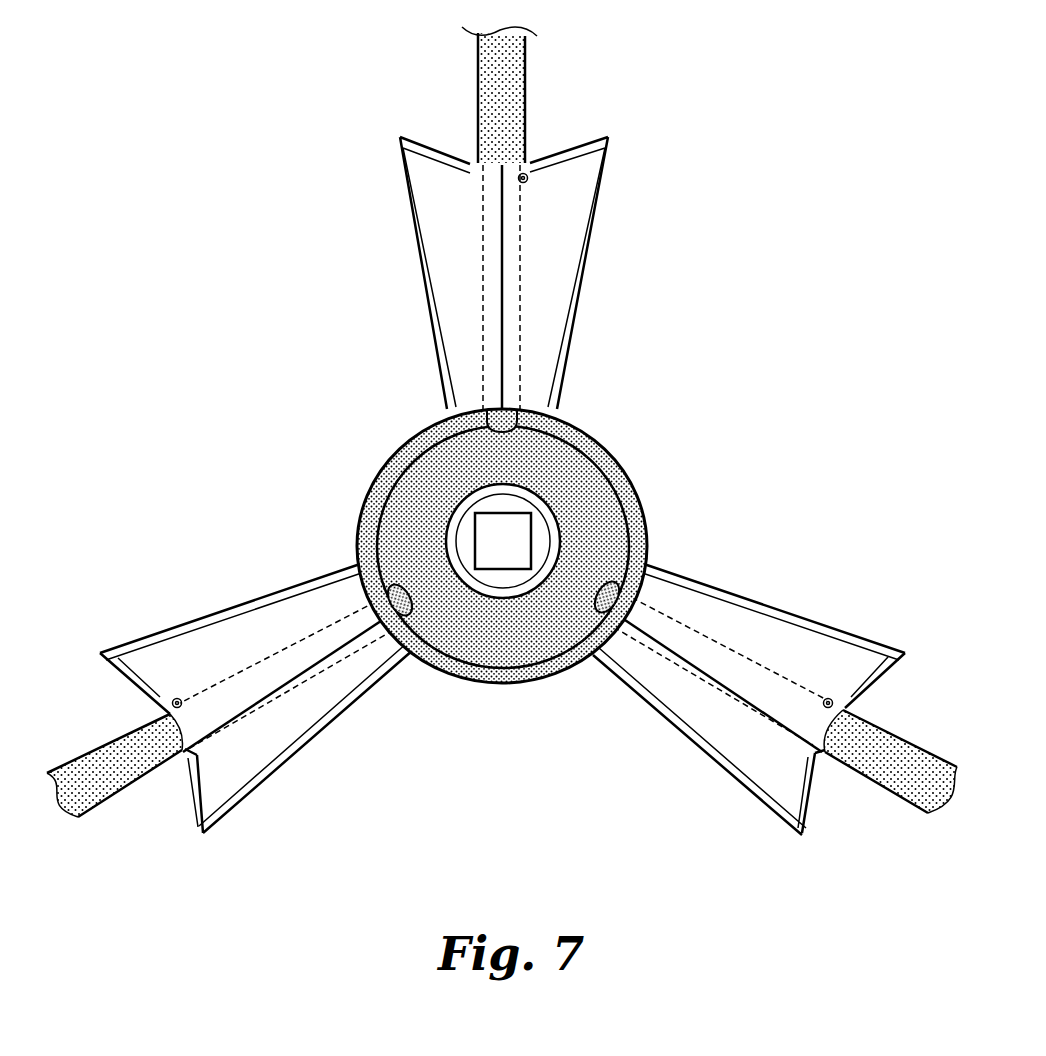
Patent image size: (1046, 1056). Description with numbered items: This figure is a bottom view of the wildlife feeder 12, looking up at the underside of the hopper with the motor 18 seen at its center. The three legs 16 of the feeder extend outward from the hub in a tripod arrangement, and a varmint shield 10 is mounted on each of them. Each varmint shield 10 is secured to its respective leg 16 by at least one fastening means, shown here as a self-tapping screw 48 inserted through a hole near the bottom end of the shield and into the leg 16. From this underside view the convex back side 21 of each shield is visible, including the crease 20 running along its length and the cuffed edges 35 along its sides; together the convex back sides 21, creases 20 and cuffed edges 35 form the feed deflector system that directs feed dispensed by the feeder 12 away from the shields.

The wildlife feeder 12 is at (502, 454).
The varmint shield 10 is at (608, 227).
The leg 16 is at (518, 70).
The motor 18 is at (517, 532).
The crease 20 is at (505, 258).
The convex back side 21 is at (285, 718).
The cuffed edge 35 is at (427, 265).
The self-tapping screw 48 is at (527, 176).